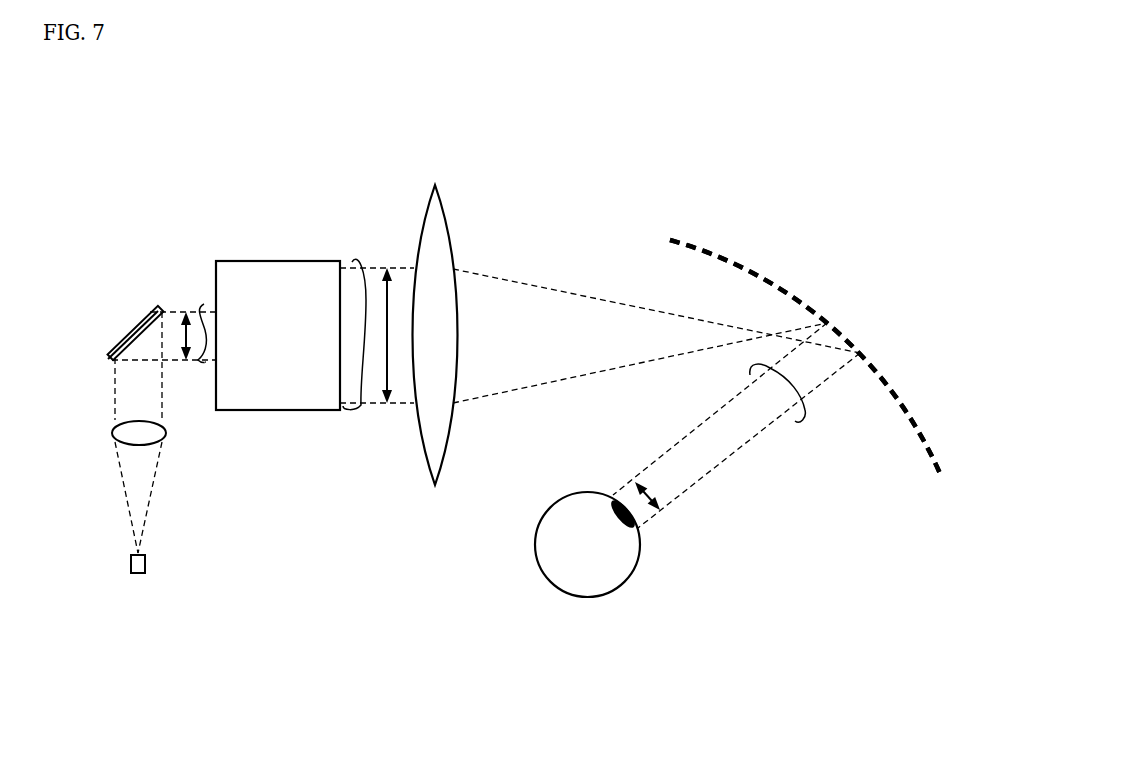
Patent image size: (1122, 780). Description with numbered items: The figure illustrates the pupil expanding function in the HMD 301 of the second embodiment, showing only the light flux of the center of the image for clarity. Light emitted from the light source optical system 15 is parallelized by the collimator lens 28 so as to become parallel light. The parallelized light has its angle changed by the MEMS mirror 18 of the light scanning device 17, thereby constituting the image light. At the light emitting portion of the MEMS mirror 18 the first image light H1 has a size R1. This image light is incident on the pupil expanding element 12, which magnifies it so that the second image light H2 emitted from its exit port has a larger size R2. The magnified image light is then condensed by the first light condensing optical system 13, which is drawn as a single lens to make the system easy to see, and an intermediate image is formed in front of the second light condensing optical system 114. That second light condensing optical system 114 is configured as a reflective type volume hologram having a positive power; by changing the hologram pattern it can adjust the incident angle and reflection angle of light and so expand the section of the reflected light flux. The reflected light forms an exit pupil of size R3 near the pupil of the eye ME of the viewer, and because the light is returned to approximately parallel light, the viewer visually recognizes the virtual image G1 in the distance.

The pupil expanding element 12 is at (293, 268).
The first light condensing optical system 13 is at (435, 198).
The light source optical system 15 is at (153, 566).
The light scanning device 17 is at (133, 313).
The MEMS mirror 18 is at (113, 347).
The collimator lens 28 is at (158, 433).
The HMD 301 is at (852, 265).
The second light condensing optical system 114 is at (910, 412).
The size of first image light R1 is at (180, 337).
The size of second image light R2 is at (376, 300).
The size of exit pupil R3 is at (656, 494).
The first image light H1 is at (205, 362).
The second image light H2 is at (343, 406).
The virtual image G1 is at (800, 422).
The eye ME is at (603, 575).